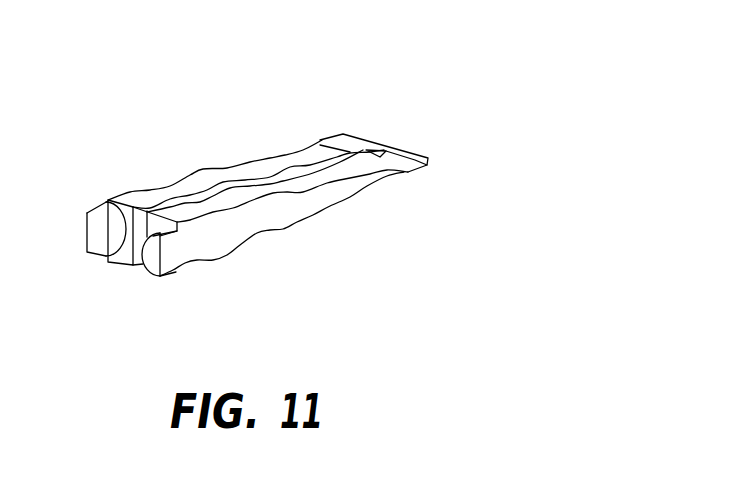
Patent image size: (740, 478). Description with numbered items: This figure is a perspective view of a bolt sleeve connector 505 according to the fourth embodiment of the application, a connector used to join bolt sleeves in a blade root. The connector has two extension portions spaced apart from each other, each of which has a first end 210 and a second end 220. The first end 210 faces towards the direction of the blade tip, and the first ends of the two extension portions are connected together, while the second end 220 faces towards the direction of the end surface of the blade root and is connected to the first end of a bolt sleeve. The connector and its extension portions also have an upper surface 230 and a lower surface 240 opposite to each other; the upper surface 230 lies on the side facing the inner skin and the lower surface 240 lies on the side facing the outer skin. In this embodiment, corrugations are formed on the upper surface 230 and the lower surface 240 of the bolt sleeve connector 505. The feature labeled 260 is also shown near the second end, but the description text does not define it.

The first end 210 is at (353, 141).
The second end 220 is at (178, 274).
The upper surface 230 is at (150, 190).
The lower surface 240 is at (284, 232).
The proximal block 260 is at (106, 243).
The bolt sleeve connector 505 is at (225, 148).